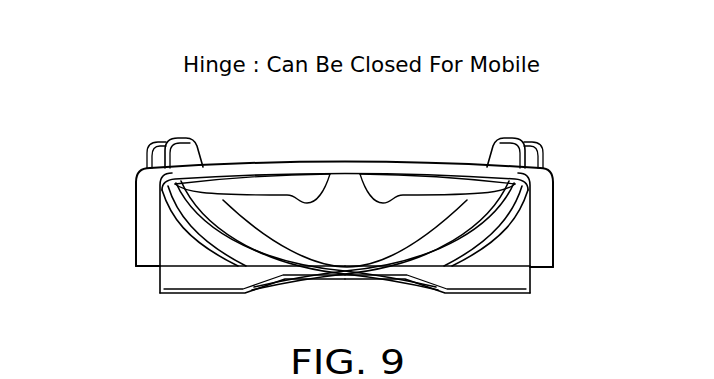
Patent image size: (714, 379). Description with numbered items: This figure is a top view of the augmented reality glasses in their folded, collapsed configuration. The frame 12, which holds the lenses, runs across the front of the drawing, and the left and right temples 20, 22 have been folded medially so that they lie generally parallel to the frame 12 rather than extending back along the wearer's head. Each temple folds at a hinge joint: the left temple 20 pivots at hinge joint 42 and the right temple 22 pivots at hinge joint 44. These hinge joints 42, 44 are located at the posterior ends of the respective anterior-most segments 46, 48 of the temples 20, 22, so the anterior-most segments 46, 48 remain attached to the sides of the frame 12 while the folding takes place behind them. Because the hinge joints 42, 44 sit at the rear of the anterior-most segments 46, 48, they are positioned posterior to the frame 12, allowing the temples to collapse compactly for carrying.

The frame 12 is at (386, 158).
The left temple 20 is at (117, 246).
The right temple 22 is at (570, 239).
The hinge joint 42 is at (158, 270).
The hinge joint 44 is at (540, 269).
The anterior-most segment 46 is at (134, 202).
The anterior-most segment 48 is at (555, 200).